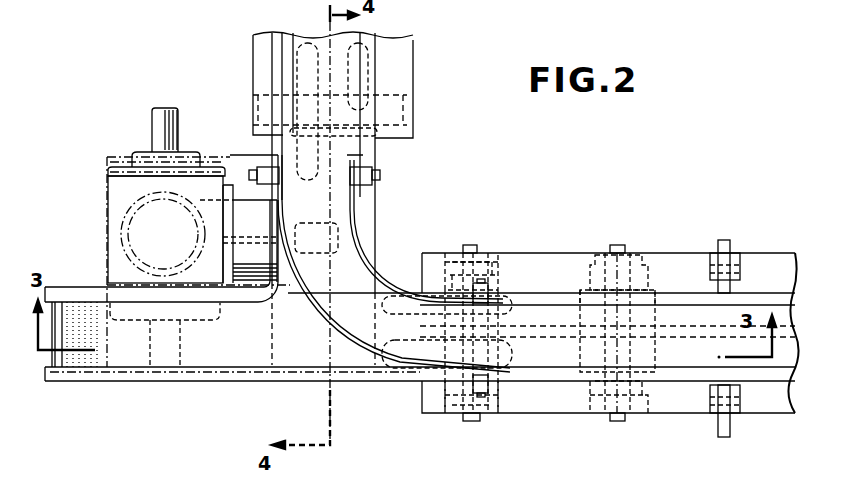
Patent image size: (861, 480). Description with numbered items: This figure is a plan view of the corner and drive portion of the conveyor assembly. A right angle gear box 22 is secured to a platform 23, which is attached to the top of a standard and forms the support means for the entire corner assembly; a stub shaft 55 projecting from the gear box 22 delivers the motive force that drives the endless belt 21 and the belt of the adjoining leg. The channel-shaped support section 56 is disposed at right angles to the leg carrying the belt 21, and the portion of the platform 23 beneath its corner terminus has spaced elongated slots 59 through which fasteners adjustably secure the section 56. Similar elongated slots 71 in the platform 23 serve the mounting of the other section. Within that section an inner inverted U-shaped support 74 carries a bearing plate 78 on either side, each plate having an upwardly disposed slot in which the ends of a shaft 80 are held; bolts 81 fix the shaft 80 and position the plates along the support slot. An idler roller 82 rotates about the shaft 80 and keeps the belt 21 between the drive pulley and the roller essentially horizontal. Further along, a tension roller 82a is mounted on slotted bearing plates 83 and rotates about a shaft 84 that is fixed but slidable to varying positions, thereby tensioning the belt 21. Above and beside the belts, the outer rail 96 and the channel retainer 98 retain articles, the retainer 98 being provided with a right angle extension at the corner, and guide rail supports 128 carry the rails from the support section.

The belt 21 is at (240, 358).
The right angle gear box 22 is at (115, 192).
The platform 23 is at (230, 157).
The motor shaft 55 is at (168, 118).
The support section 56 is at (397, 58).
The elongated slots 59 is at (290, 66).
The elongated slots 71 is at (503, 300).
The inner inverted U-shaped support 74 is at (480, 252).
The bearing plate 78 is at (492, 255).
The shaft 80 is at (462, 397).
The bolts 81 is at (473, 245).
The idler roller 82 is at (515, 290).
The tension roller 82a is at (653, 290).
The slotted bearing plates 83 is at (647, 287).
The shaft 84 is at (583, 265).
The outer rail 96 is at (358, 377).
The channel retainer 98 is at (88, 297).
The guide rail supports 128 is at (740, 255).